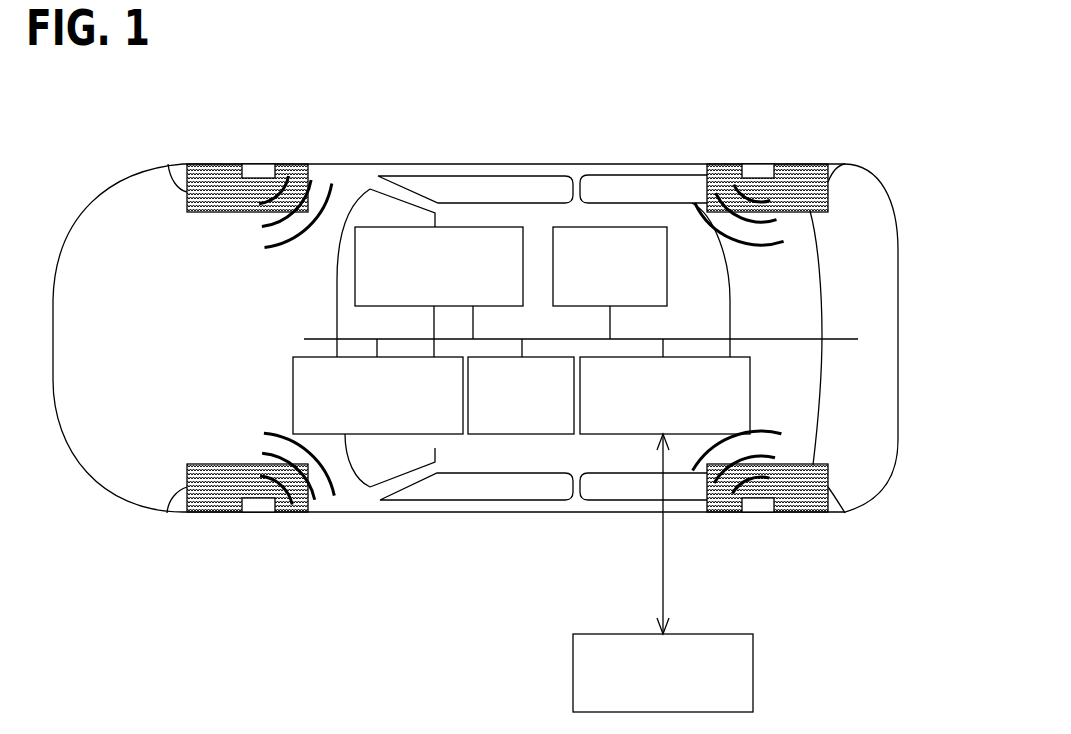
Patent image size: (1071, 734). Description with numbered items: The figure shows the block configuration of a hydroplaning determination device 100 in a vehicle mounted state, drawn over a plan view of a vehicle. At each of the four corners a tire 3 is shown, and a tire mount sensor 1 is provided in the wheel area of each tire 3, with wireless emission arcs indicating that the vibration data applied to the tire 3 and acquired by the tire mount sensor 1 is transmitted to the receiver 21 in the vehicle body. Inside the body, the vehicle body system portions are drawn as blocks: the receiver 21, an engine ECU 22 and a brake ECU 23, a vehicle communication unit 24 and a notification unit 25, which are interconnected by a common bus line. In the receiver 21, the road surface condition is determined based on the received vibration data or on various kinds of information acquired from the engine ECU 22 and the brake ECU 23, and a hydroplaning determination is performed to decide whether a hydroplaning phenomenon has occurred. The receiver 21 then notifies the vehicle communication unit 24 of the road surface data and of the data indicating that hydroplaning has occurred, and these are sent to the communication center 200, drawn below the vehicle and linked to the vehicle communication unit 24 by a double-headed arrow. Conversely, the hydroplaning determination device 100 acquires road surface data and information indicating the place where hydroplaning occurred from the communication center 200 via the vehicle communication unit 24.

The hydroplaning determination device 100 is at (390, 140).
The tire mount sensor 1 is at (256, 176).
The tire 3 is at (167, 163).
The receiver 21 is at (550, 434).
The engine ECU 22 is at (447, 434).
The brake ECU 23 is at (615, 227).
The vehicle communication unit 24 is at (690, 434).
The notification unit 25 is at (455, 227).
The communication center 200 is at (753, 670).